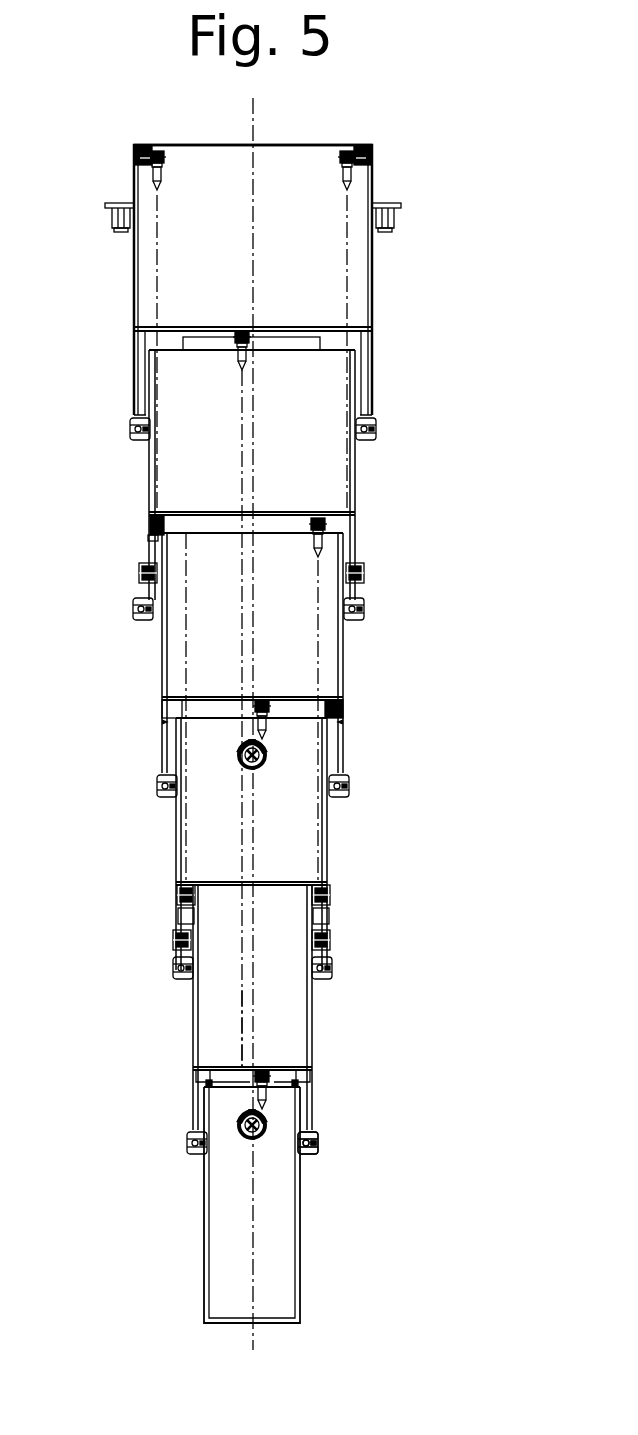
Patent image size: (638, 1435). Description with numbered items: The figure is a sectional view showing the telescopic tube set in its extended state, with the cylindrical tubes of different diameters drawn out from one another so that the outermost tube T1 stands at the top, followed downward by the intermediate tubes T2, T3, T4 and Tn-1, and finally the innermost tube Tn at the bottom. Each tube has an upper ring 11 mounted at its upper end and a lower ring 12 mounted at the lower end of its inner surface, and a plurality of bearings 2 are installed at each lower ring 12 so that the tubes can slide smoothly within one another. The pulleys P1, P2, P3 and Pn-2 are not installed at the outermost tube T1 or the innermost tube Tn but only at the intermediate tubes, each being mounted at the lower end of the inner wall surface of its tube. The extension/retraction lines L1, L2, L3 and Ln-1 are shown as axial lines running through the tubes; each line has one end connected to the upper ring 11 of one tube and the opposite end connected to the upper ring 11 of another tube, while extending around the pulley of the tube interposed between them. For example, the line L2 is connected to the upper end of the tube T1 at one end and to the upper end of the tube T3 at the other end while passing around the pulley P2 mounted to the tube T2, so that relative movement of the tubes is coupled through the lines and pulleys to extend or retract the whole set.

The upper ring 11 is at (140, 145).
The outermost tube T1 is at (134, 269).
The extension/retraction line L1 is at (347, 296).
The intermediate tube T2 is at (149, 470).
The extension/retraction line L2 is at (242, 468).
The pulley P1 is at (150, 576).
The intermediate tube T3 is at (162, 672).
The extension/retraction line L3 is at (318, 667).
The pulley P2 is at (265, 752).
The intermediate tube T4 is at (176, 831).
The pulley P3 is at (173, 937).
The extension/retraction line Ln-1 is at (242, 1010).
The intermediate tube Tn-1 is at (193, 1018).
The lower ring 12 is at (200, 1128).
The pulley Pn-2 is at (265, 1122).
The bearing 2 is at (318, 1143).
The innermost tube Tn is at (204, 1228).